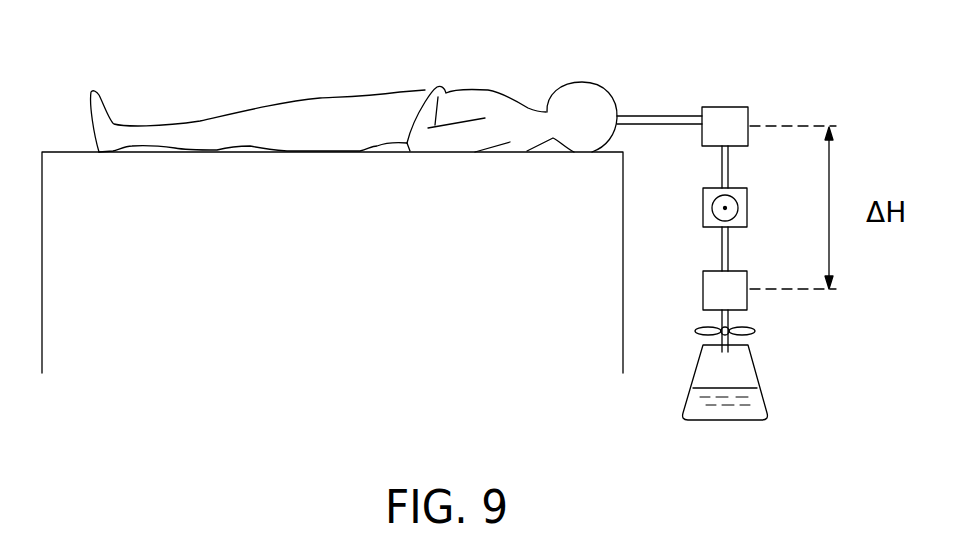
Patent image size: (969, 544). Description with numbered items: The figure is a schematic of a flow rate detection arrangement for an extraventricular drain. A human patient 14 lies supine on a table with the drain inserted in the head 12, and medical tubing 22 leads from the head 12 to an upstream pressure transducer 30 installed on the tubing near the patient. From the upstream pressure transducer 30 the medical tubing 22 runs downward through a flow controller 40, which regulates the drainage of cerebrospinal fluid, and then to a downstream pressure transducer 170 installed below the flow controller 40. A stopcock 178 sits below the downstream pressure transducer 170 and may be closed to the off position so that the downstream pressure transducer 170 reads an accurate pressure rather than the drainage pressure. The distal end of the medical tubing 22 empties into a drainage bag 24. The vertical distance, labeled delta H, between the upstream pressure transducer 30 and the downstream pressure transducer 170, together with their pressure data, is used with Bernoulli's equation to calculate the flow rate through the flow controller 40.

The head 12 is at (391, 81).
The human patient 14 is at (385, 102).
The medical tubing 22 is at (729, 172).
The upstream pressure transducer 30 is at (725, 115).
The flow controller 40 is at (742, 222).
The downstream pressure transducer 170 is at (743, 302).
The stopcock 178 is at (700, 330).
The drainage bag 24 is at (757, 398).